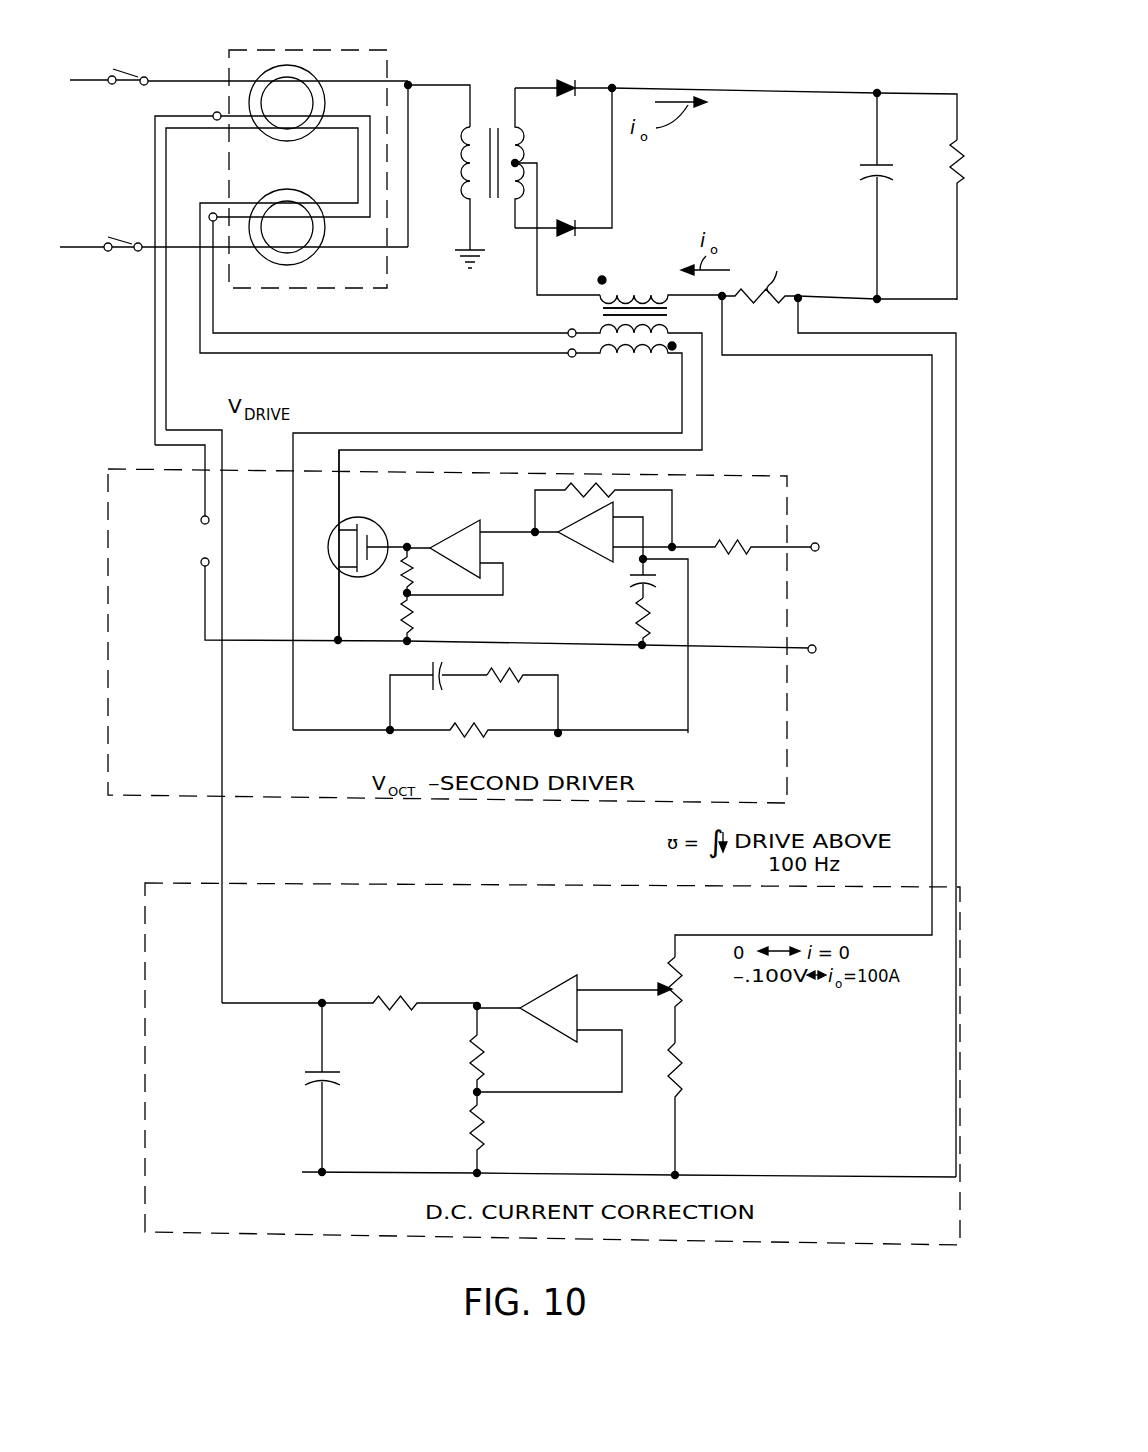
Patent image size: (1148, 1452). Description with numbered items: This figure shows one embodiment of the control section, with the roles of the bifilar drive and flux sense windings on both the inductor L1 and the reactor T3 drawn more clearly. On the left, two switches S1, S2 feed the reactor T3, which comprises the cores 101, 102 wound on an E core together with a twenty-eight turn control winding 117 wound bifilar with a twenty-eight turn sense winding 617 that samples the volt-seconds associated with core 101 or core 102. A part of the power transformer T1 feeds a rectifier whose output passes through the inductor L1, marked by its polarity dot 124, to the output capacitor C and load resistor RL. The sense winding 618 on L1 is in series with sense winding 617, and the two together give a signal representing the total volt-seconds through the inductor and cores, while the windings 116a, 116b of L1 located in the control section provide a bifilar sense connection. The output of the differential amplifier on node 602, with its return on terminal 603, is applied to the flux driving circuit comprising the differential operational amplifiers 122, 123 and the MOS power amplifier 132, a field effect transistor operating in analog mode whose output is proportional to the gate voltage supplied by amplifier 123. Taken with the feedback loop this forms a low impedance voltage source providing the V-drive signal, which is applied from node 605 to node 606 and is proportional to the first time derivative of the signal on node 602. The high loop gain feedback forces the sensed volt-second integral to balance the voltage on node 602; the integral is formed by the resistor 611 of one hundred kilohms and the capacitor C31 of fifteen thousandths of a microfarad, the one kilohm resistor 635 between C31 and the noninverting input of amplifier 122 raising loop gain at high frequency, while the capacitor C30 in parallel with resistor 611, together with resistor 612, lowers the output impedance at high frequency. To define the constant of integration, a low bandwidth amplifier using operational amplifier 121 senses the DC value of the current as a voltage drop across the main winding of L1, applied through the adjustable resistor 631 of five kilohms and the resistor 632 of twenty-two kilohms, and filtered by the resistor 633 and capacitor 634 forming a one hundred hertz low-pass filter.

The switch S1 is at (128, 68).
The switch S2 is at (122, 235).
The reactor T3 is at (318, 50).
The core 101 is at (325, 101).
The core 102 is at (317, 262).
The control winding 117 is at (370, 163).
The sense winding 617 is at (358, 163).
The power transformer T1 is at (499, 100).
The inductor L1 is at (661, 291).
The winding polarity dot 124 is at (621, 292).
The winding 116a is at (600, 330).
The winding 116b is at (635, 311).
The sense winding 618 is at (598, 355).
The output capacitor C is at (882, 164).
The load resistor RL is at (952, 178).
The node 606 is at (205, 452).
The node 605 is at (340, 489).
The MOS power amplifier 132 is at (380, 521).
The differential operational amplifier 123 is at (472, 522).
The flux driver amplifier 122 is at (580, 550).
The node 602 is at (815, 543).
The negative terminal 603 is at (812, 655).
The capacitor C31 is at (661, 578).
The resistor 635 is at (638, 619).
The capacitor C30 is at (430, 671).
The resistor 612 is at (518, 675).
The resistor 611 is at (470, 730).
The resistor 633 is at (406, 1000).
The capacitor 634 is at (335, 1086).
The operational amplifier 121 is at (546, 988).
The resistor 631 is at (669, 967).
The resistor 632 is at (668, 1091).